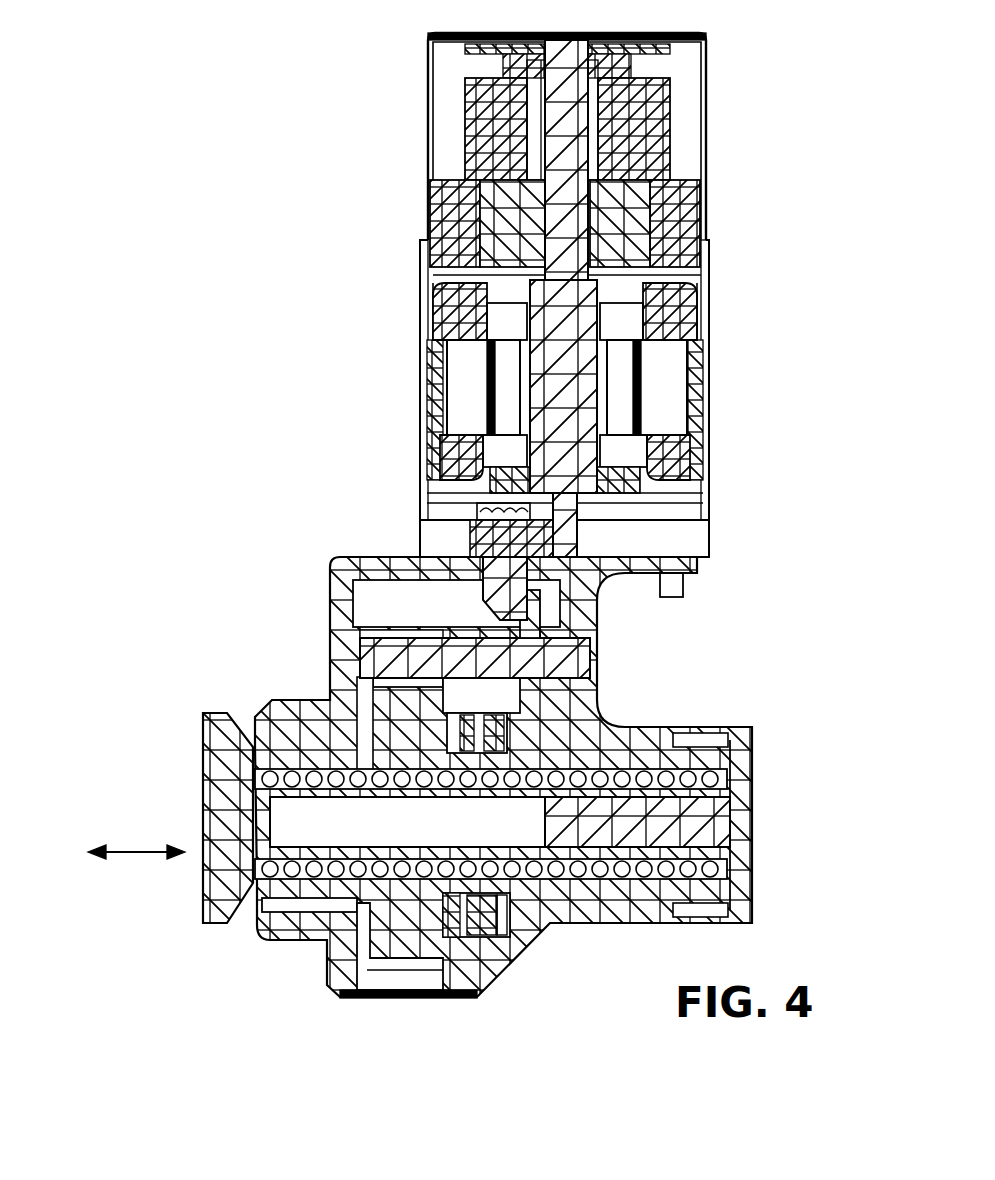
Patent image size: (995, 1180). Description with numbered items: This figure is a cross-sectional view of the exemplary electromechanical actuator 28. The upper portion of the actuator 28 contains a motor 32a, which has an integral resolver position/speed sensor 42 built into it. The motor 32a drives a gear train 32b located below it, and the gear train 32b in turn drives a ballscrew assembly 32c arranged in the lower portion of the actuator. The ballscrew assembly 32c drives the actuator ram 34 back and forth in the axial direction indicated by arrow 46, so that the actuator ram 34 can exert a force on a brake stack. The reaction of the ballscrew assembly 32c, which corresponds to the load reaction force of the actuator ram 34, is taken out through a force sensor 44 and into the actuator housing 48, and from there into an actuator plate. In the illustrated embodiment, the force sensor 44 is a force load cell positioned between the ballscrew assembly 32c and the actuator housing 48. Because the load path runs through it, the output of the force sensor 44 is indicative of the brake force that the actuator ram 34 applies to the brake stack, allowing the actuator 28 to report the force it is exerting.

The actuator 28 is at (366, 87).
The integral resolver position/speed sensor 42 is at (705, 192).
The motor 32a is at (705, 365).
The gear train 32b is at (632, 648).
The ballscrew assembly 32c is at (385, 970).
The actuator ram 34 is at (205, 738).
The force sensor 44 is at (500, 940).
The arrow 46 is at (123, 853).
The actuator housing 48 is at (560, 912).